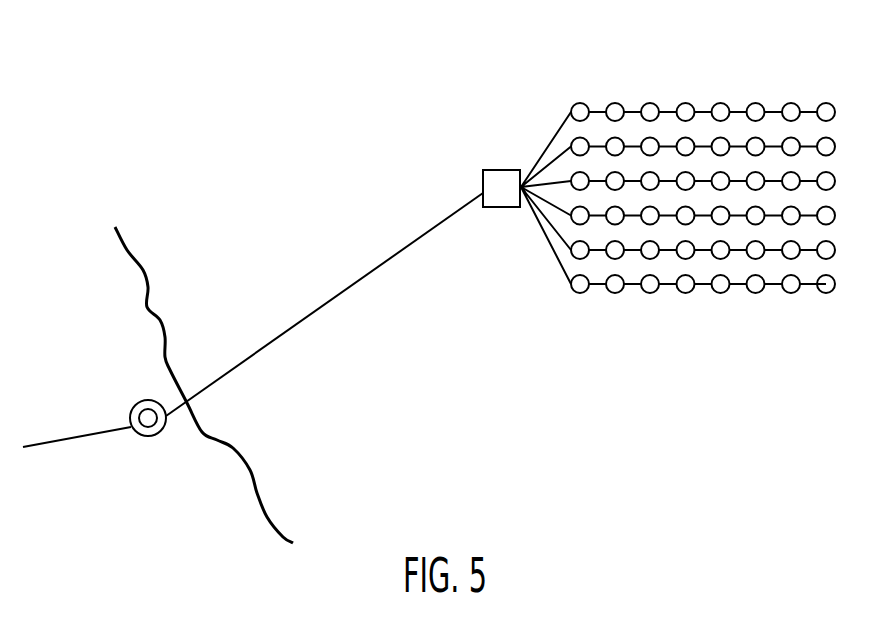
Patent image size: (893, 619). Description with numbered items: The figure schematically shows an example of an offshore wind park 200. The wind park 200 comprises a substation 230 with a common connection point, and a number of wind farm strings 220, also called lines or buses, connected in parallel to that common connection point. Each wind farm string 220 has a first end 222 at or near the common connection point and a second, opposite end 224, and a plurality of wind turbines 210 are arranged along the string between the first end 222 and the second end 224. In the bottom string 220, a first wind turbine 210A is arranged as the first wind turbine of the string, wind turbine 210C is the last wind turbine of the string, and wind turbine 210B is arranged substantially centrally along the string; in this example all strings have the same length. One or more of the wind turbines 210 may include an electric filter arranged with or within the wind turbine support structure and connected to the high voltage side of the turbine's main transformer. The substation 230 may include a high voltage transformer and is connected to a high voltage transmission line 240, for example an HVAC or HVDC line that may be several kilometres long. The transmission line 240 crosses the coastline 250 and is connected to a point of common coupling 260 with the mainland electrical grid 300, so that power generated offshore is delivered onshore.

The offshore wind park 200 is at (786, 50).
The wind turbines 210 is at (615, 103).
The first wind turbine 210A is at (580, 293).
The wind turbine arranged substantially centrally 210B is at (686, 293).
The last wind turbine 210C is at (823, 293).
The wind farm string 220 is at (553, 137).
The first end 222 is at (521, 220).
The second end 224 is at (841, 299).
The substation 230 is at (502, 170).
The high voltage transmission line 240 is at (332, 300).
The coastline 250 is at (125, 248).
The point of common coupling 260 is at (132, 407).
The mainland electrical grid 300 is at (75, 440).